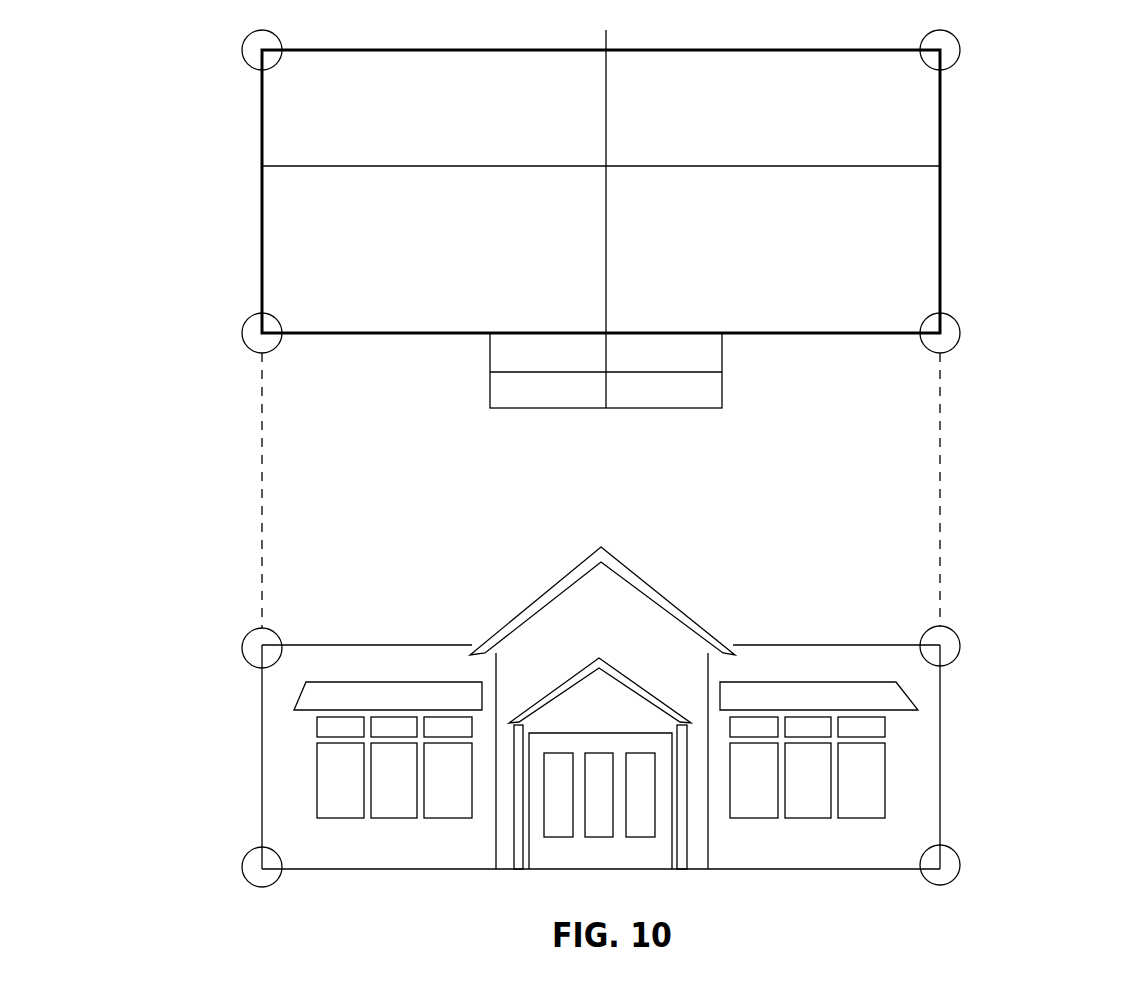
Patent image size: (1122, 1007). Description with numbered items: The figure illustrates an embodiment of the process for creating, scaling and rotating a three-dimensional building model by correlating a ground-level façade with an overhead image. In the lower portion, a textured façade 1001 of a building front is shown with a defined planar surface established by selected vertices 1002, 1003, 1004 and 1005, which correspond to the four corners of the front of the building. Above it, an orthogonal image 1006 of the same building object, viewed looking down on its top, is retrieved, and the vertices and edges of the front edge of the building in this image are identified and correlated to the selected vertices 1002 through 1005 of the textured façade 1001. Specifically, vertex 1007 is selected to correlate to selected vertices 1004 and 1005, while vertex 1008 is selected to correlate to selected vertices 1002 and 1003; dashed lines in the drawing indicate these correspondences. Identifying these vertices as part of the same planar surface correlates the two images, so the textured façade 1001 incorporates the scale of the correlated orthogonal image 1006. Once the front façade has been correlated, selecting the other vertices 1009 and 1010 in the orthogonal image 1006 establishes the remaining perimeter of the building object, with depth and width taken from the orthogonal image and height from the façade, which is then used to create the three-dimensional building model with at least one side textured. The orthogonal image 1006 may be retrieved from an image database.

The textured façade 1001 is at (838, 870).
The selected vertex 1002 is at (962, 857).
The selected vertex 1003 is at (960, 652).
The selected vertex 1004 is at (245, 645).
The selected vertex 1005 is at (242, 868).
The orthogonal image 1006 is at (817, 335).
The vertex 1007 is at (245, 322).
The vertex 1008 is at (960, 327).
The vertex 1009 is at (960, 42).
The vertex 1010 is at (242, 48).